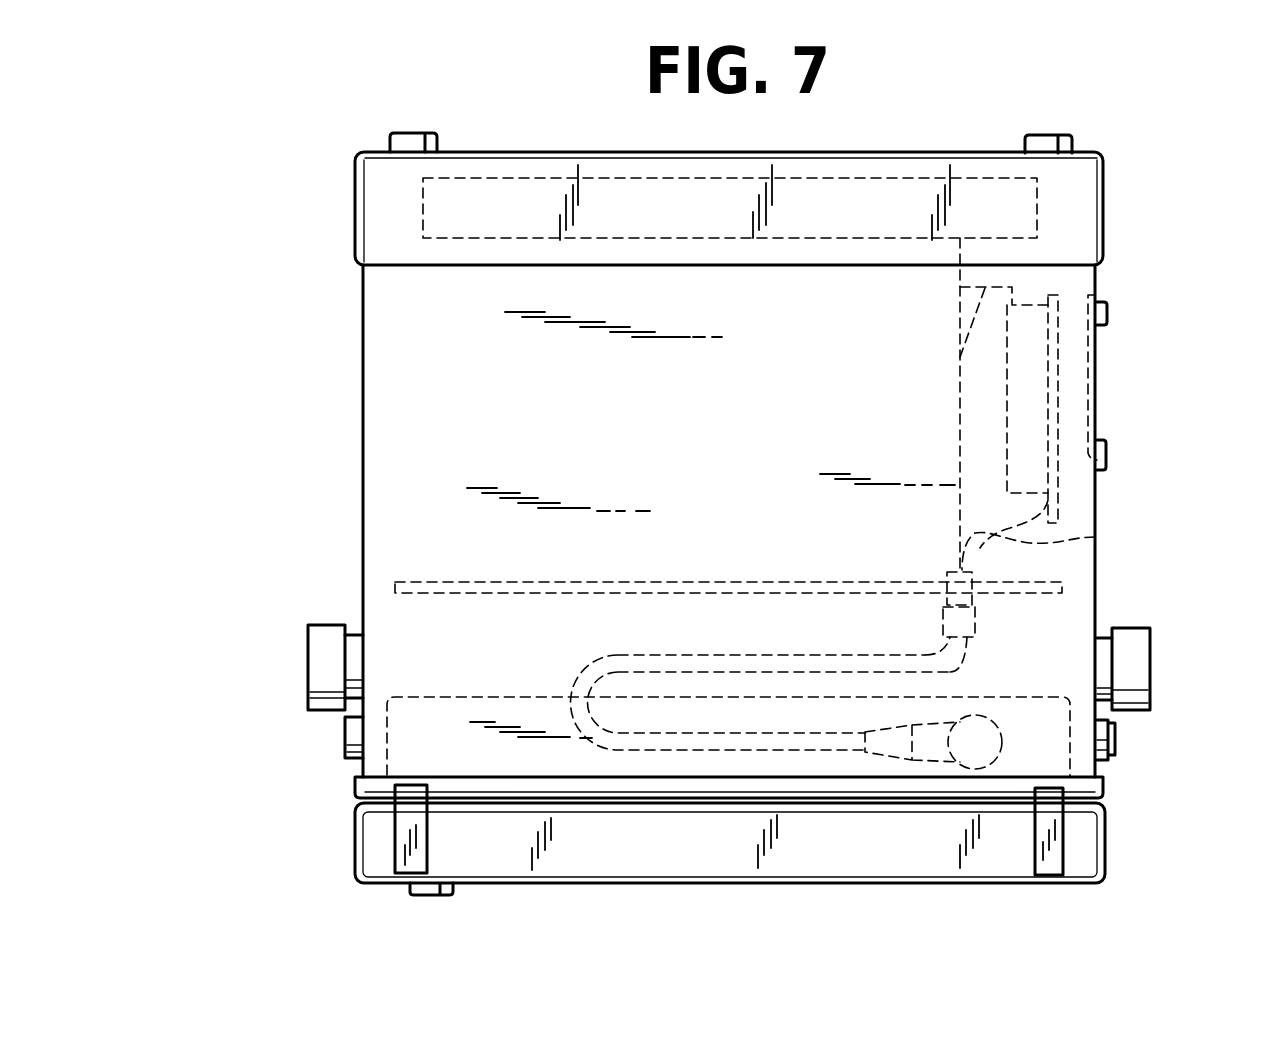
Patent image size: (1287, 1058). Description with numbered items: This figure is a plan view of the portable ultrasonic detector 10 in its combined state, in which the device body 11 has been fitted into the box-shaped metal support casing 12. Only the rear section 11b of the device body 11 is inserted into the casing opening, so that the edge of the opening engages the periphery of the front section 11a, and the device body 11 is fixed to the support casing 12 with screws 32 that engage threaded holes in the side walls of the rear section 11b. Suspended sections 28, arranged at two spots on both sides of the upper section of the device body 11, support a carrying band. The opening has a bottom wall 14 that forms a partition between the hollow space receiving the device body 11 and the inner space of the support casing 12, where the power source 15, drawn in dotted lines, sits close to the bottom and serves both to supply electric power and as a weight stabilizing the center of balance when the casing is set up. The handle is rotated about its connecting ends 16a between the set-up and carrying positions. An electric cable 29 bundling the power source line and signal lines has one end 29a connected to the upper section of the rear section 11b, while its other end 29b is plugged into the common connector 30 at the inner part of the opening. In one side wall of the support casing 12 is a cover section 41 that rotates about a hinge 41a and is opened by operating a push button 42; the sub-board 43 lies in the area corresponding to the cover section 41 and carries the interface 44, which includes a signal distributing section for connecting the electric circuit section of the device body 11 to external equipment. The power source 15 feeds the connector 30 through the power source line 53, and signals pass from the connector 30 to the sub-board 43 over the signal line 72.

The portable ultrasonic detector 10 is at (350, 313).
The support casing 12 is at (397, 407).
The power source 15 is at (1037, 205).
The power source line 53 is at (960, 357).
The interface 44 is at (1032, 305).
The sub-board 43 is at (1052, 505).
The cover section 41 is at (1100, 366).
The push button 42 is at (1107, 315).
The hinge 41a is at (1107, 457).
The signal line 72 is at (1095, 533).
The bottom wall 14 is at (1062, 582).
The connector 30 is at (940, 603).
The electric cable 29 is at (745, 655).
The another end of the electric cable 29b is at (973, 622).
The one end of the electric cable 29a is at (985, 727).
The rear section 11b is at (462, 695).
The connecting ends 16a is at (318, 672).
The screws 32 is at (345, 748).
The device body 11 is at (1107, 857).
The front section 11a is at (838, 870).
The suspended sections 28 is at (400, 848).